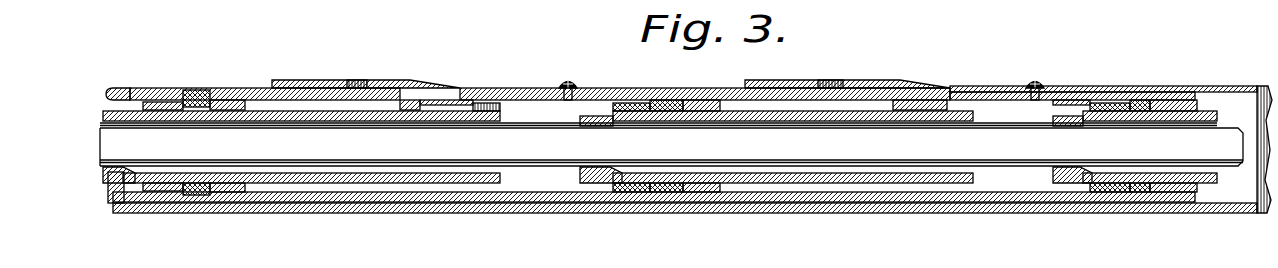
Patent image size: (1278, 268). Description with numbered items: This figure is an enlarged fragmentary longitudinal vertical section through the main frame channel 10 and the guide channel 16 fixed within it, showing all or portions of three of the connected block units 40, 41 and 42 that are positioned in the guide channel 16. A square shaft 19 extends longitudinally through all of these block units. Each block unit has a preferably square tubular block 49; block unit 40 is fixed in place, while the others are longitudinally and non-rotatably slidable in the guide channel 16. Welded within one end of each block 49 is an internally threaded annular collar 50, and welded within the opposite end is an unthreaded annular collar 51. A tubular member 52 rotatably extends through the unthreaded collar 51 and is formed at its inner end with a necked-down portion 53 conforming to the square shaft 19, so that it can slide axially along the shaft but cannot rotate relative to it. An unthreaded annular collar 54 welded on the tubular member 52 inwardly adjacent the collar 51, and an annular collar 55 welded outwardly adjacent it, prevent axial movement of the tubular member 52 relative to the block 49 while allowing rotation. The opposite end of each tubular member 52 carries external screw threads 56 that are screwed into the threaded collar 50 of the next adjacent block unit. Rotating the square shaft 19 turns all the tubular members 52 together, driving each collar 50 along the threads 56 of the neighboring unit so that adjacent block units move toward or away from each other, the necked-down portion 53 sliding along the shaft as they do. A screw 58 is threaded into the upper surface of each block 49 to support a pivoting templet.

The main frame channel 10 is at (1262, 90).
The guide channel 16 is at (770, 204).
The square shaft 19 is at (825, 148).
The block unit 40 is at (172, 95).
The block unit 41 is at (512, 97).
The block unit 42 is at (978, 94).
The tubular block 49 is at (116, 90).
The internally threaded annular collar 50 is at (410, 102).
The unthreaded annular collar 51 is at (208, 100).
The tubular member 52 is at (282, 112).
The necked-down portion 53 is at (592, 116).
The unthreaded annular collar 54 is at (150, 102).
The annular collar 55 is at (232, 104).
The external screw threads 56 is at (355, 104).
The screw 58 is at (568, 78).